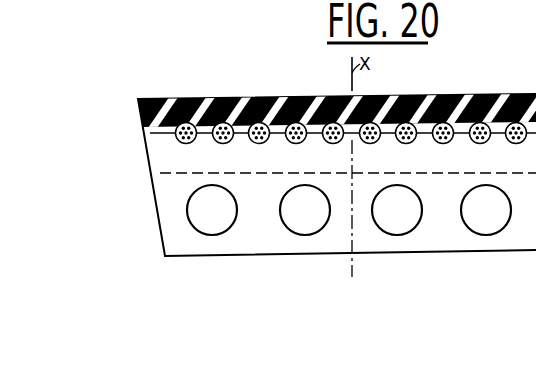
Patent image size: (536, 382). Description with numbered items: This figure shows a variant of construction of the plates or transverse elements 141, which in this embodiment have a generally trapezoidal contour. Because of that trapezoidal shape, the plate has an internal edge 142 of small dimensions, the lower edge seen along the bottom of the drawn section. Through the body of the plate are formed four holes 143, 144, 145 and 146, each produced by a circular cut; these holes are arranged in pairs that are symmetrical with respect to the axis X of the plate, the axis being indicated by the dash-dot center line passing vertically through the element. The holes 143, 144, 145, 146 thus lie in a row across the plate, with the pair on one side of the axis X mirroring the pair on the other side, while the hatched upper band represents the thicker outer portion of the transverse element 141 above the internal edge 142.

The plates or transverse elements 141 is at (133, 183).
The internal edge 142 is at (268, 258).
The hole 143 is at (206, 232).
The hole 144 is at (314, 233).
The hole 145 is at (396, 233).
The hole 146 is at (488, 233).